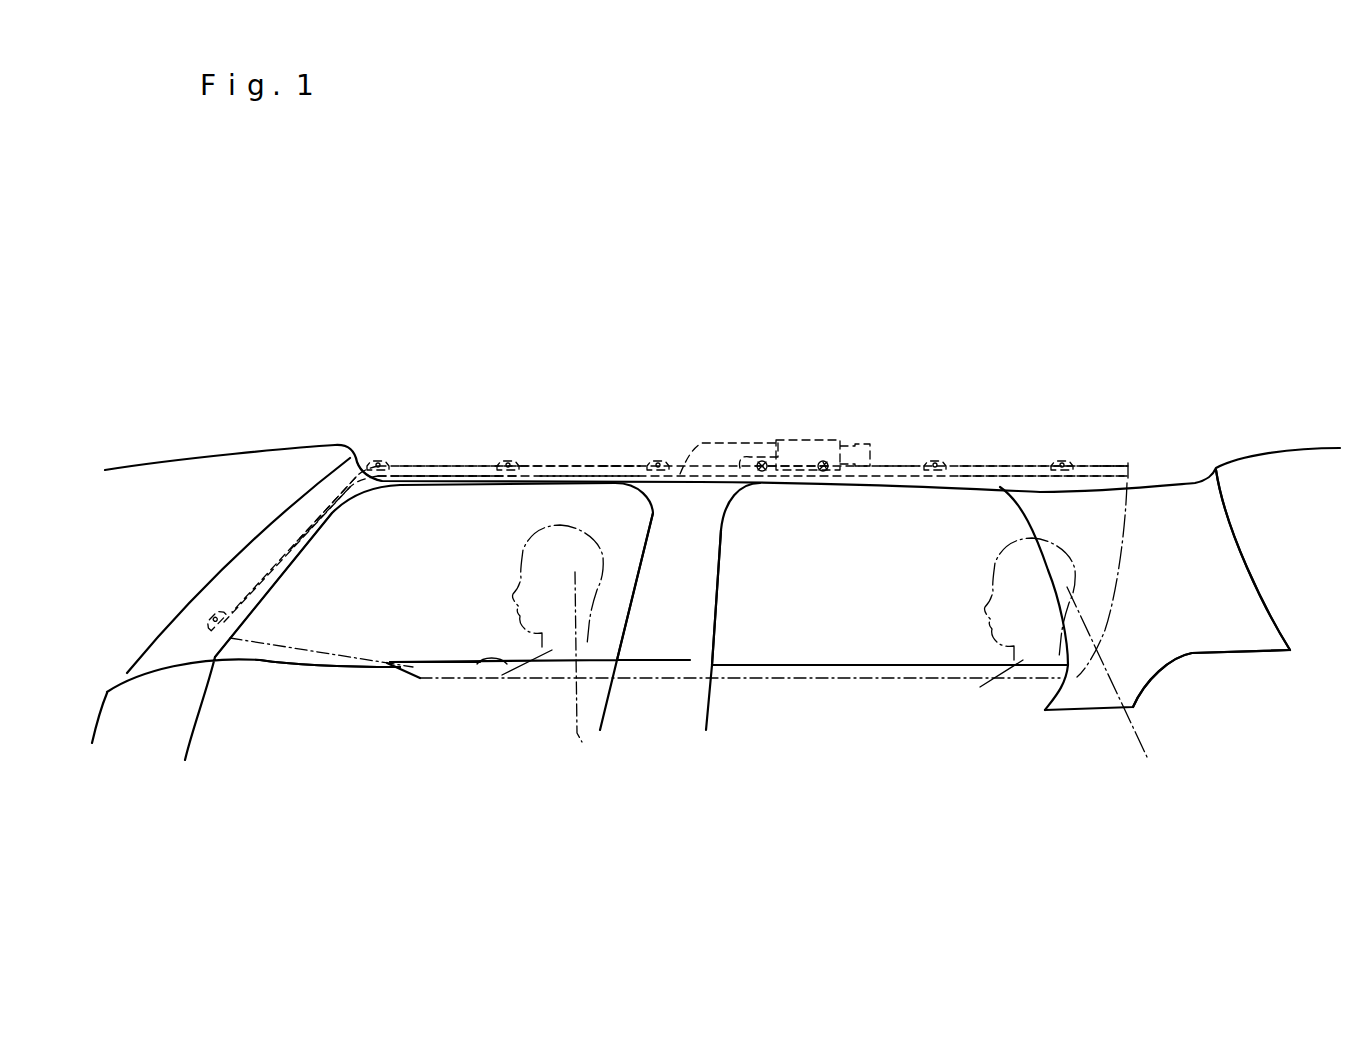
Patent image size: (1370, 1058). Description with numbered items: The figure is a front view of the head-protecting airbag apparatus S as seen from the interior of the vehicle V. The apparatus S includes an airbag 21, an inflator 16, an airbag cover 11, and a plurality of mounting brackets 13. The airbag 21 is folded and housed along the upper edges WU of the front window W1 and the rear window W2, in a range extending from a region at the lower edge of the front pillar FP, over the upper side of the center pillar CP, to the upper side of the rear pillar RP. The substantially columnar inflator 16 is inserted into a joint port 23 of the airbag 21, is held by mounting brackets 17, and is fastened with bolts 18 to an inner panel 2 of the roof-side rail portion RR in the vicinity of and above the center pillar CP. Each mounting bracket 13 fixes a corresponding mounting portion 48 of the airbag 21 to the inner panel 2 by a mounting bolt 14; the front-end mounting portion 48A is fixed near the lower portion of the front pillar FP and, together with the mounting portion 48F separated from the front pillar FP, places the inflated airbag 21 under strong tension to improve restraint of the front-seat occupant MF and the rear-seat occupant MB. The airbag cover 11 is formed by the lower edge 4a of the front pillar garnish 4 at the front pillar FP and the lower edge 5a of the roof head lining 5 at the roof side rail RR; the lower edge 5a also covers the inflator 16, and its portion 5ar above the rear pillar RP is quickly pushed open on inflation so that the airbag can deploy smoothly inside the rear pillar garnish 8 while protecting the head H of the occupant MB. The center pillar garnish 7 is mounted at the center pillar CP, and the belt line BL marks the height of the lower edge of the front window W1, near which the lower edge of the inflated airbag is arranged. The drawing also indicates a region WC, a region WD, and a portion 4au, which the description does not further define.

The vehicle V is at (194, 303).
The front pillar garnish 4 is at (273, 535).
The front pillar FP is at (197, 546).
The mounting portion of the front end 48A is at (200, 628).
The mounting portion 48 is at (721, 465).
The mounting portion separated from the front pillar 48F is at (1075, 465).
The mounting bracket 13 is at (379, 462).
The mounting bolt 14 is at (372, 462).
The inner panel 2 is at (443, 410).
The roof head lining 5 is at (536, 460).
The upper edges of windows WU is at (472, 463).
The roof-side rail portion RR is at (568, 453).
The center pillar region WC is at (627, 507).
The portion above the rear pillar of the lower edge of the roof head lining 5ar is at (1027, 493).
The head-protecting airbag apparatus S is at (1182, 383).
The joint port 23 is at (722, 455).
The inflator 16 is at (850, 458).
The mounting brackets 17 is at (822, 458).
The bolts 18 is at (820, 487).
The airbag 21 is at (906, 470).
The front pillar upper portion 4au is at (360, 494).
The lower edge of the front pillar garnish 4a is at (353, 527).
The lower edge of the roof head lining 5a is at (493, 482).
The airbag cover 11 is at (372, 588).
The head of an occupant H is at (817, 663).
The front window W1 is at (299, 660).
The front door window WD is at (433, 660).
The belt line BL is at (473, 668).
The occupant at the front seat MF is at (550, 650).
The center pillar CP is at (658, 672).
The center pillar garnish 7 is at (690, 650).
The rear window W2 is at (790, 650).
The occupant at the rear seat MB is at (1033, 650).
The rear pillar garnish 8 is at (1183, 633).
The rear pillar RP is at (1281, 564).